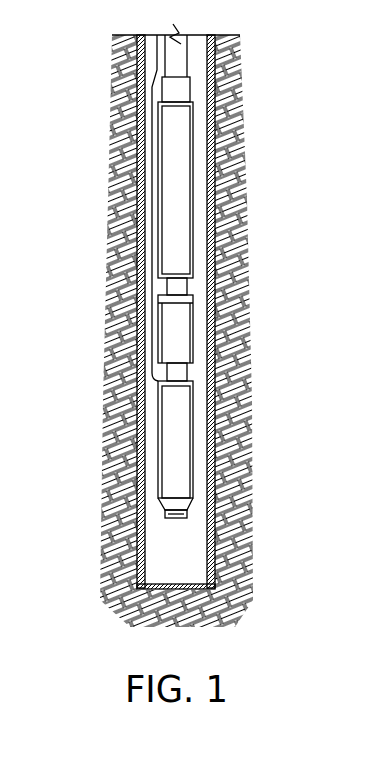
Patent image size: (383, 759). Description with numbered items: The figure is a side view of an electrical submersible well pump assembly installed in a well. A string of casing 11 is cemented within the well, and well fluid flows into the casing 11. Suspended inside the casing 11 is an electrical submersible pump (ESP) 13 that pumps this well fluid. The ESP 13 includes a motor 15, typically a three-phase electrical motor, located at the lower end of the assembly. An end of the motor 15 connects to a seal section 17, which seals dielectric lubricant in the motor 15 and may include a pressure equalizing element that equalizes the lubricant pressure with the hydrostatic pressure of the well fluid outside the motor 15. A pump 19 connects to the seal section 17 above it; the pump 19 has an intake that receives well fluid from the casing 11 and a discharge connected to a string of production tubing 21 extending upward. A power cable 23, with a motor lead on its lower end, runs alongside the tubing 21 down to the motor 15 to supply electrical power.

The casing 11 is at (201, 541).
The electrical submersible pump (ESP) 13 is at (197, 310).
The motor 15 is at (193, 447).
The seal section 17 is at (193, 338).
The pump 19 is at (193, 248).
The production tubing 21 is at (182, 66).
The power cable 23 is at (150, 73).